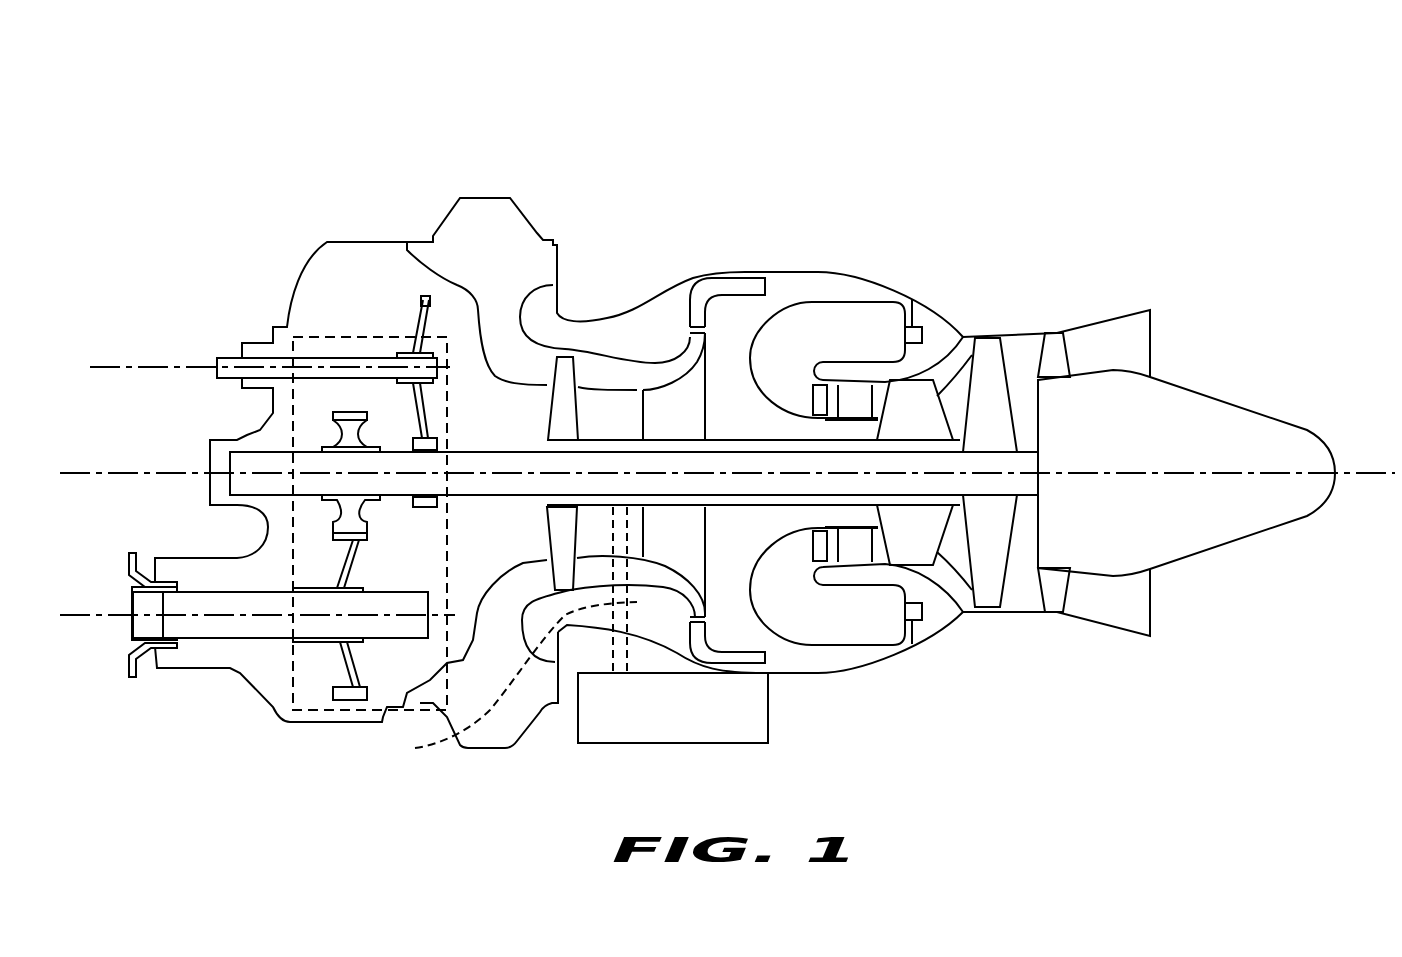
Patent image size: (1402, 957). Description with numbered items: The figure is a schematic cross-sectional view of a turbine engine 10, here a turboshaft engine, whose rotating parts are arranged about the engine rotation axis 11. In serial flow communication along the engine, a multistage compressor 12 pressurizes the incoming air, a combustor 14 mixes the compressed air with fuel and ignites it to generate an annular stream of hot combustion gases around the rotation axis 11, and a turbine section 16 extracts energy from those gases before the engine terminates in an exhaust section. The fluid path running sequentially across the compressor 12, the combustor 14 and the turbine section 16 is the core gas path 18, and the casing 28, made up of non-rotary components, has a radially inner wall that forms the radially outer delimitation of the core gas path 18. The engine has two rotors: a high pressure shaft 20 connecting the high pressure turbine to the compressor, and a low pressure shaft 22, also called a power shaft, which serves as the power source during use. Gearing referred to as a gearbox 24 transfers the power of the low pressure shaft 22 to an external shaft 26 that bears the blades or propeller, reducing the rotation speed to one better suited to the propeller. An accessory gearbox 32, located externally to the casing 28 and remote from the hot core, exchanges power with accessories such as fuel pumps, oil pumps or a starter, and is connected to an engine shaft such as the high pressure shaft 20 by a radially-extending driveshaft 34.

The turbine engine 10 is at (1106, 222).
The engine rotation axis 11 is at (1250, 473).
The multistage compressor 12 is at (632, 343).
The combustor 14 is at (860, 298).
The turbine section 16 is at (958, 355).
The core gas path 18 is at (743, 292).
The high pressure shaft 20 is at (812, 443).
The low pressure shaft 22 is at (777, 452).
The gearbox 24 is at (353, 337).
The external shaft 26 is at (188, 572).
The casing 28 is at (903, 292).
The accessory gearbox 32 is at (740, 710).
The radially-extending driveshaft 34 is at (507, 683).